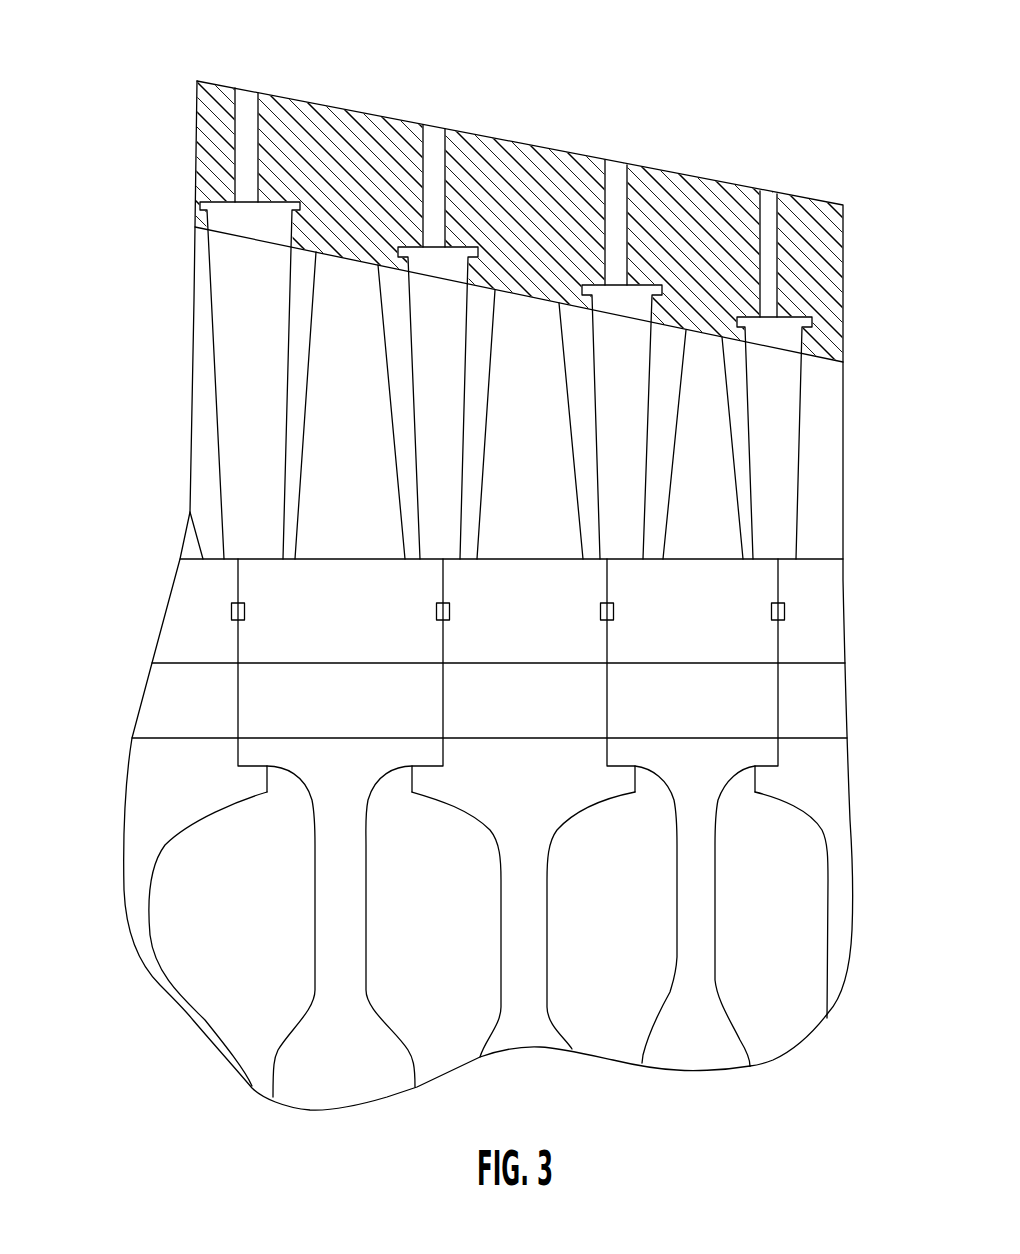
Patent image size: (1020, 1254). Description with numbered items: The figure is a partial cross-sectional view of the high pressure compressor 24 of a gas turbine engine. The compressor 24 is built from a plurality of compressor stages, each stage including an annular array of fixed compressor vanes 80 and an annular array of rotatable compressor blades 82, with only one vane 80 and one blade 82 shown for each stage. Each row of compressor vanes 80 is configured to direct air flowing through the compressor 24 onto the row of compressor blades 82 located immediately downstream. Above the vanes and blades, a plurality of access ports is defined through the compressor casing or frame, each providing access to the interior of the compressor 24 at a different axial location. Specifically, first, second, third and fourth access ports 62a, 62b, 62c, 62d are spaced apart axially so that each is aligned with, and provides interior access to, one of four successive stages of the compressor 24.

The high pressure compressor 24 is at (122, 111).
The first access port 62a is at (240, 70).
The second access port 62b is at (426, 106).
The third access port 62c is at (615, 146).
The fourth access port 62d is at (766, 178).
The compressor vane 80 is at (263, 378).
The compressor blade 82 is at (363, 407).